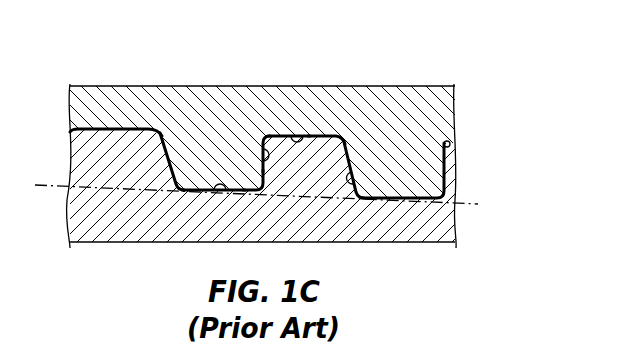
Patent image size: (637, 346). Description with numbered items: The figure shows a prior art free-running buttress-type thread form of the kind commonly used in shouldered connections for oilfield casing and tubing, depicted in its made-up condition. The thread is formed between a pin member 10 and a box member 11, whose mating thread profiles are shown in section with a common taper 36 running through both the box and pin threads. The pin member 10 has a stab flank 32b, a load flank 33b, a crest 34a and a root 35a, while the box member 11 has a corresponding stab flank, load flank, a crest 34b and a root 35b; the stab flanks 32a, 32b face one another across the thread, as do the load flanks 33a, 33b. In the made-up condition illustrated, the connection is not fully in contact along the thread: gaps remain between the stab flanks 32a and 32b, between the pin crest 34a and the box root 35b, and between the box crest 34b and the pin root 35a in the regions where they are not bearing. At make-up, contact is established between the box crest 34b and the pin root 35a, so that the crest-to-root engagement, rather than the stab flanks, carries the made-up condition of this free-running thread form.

The pin member 10 is at (380, 243).
The box member 11 is at (112, 86).
The stab flank 32a is at (362, 190).
The stab flank 32b is at (355, 167).
The load flank 33a is at (258, 153).
The load flank 33b is at (257, 178).
The crest 34a is at (304, 136).
The crest 34b is at (212, 192).
The root 35a is at (190, 192).
The root 35b is at (330, 136).
The taper 36 is at (477, 206).